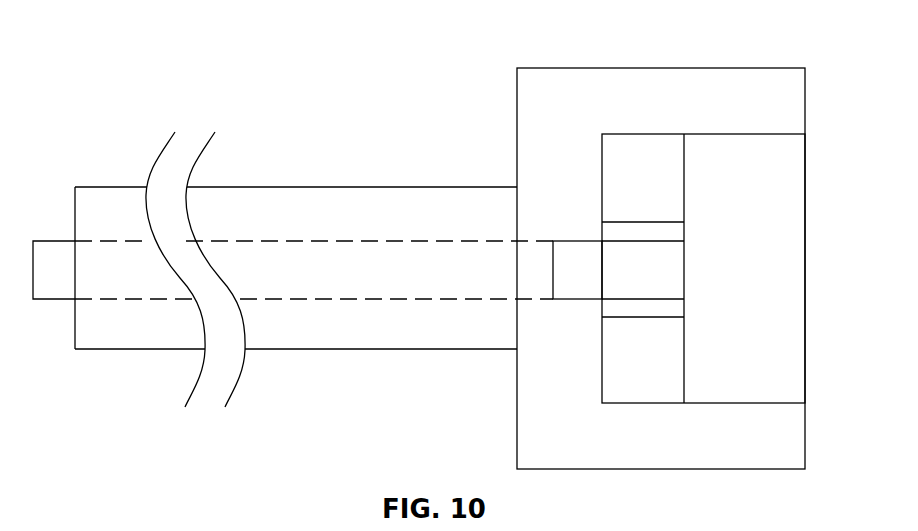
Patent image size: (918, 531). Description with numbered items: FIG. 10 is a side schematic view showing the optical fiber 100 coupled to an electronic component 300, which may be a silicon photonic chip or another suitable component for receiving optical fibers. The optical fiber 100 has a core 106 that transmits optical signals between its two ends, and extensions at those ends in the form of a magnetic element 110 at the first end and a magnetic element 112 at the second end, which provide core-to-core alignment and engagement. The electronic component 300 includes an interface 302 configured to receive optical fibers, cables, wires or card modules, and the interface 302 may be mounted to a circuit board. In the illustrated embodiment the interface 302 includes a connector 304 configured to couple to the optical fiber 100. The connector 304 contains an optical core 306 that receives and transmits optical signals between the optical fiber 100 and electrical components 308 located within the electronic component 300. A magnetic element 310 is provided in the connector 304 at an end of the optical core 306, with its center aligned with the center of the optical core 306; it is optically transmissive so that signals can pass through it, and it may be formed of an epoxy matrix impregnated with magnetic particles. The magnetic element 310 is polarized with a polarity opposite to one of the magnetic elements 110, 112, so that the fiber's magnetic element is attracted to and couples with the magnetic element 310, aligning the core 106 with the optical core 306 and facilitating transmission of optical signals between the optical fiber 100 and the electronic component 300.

The optical fiber 100 is at (293, 269).
The core 106 is at (323, 238).
The magnetic element 110 is at (480, 326).
The magnetic element 112 is at (538, 288).
The electronic component 300 is at (691, 245).
The interface 302 is at (733, 244).
The connector 304 is at (621, 240).
The optical core 306 is at (648, 287).
The electrical components 308 is at (785, 247).
The magnetic element 310 is at (582, 247).